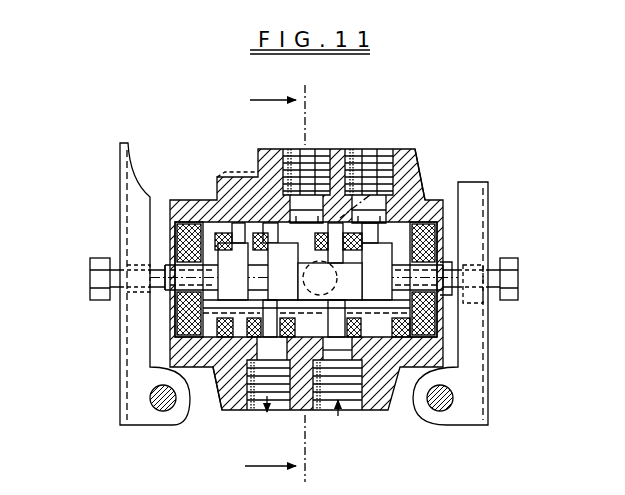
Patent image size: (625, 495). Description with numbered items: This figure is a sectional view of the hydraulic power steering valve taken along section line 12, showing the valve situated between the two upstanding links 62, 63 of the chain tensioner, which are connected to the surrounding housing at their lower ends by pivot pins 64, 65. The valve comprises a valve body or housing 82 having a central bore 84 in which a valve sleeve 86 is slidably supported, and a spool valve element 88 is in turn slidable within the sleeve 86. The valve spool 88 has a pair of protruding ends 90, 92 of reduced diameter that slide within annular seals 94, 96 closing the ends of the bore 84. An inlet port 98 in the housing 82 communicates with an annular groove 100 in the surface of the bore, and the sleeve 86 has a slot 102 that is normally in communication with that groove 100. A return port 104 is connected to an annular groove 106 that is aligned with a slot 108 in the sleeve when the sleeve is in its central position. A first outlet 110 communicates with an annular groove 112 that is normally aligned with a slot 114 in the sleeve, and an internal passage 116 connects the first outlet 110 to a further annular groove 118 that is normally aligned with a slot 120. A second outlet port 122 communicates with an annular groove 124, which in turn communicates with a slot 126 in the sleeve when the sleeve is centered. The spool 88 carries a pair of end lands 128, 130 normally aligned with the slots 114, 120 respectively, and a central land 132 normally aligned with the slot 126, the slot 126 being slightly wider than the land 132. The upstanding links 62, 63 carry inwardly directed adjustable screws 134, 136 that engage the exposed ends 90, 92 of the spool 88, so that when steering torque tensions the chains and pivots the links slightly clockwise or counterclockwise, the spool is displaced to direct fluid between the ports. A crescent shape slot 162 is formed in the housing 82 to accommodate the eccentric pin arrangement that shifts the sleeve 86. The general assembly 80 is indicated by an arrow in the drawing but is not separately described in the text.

The section line 12 is at (275, 285).
The upstanding link 62 is at (118, 392).
The upstanding link 63 is at (490, 375).
The pivot pin 64 is at (163, 412).
The pivot pin 65 is at (440, 412).
The hydraulic unit 80 is at (447, 108).
The valve body 82 is at (363, 223).
The central bore 84 is at (432, 332).
The valve sleeve 86 is at (205, 238).
The spool valve element 88 is at (207, 258).
The protruding end 90 is at (175, 268).
The protruding end 92 is at (432, 278).
The annular seal 94 is at (187, 317).
The annular seal 96 is at (415, 327).
The inlet port 98 is at (350, 412).
The annular groove 100 is at (343, 195).
The slot 102 is at (358, 222).
The return port 104 is at (258, 418).
The annular groove 106 is at (270, 200).
The slot 108 is at (263, 228).
The first outlet 110 is at (357, 230).
The annular groove 112 is at (372, 235).
The slot 114 is at (382, 262).
The internal passage 116 is at (230, 176).
The annular groove 118 is at (213, 235).
The slot 120 is at (217, 372).
The second outlet port 122 is at (297, 150).
The annular groove 124 is at (318, 165).
The slot 126 is at (312, 415).
The end land 128 is at (220, 295).
The end land 130 is at (400, 258).
The central land 132 is at (305, 340).
The adjustable screw 134 is at (100, 278).
The adjustable screw 136 is at (512, 277).
The crescent shape slot 162 is at (370, 195).